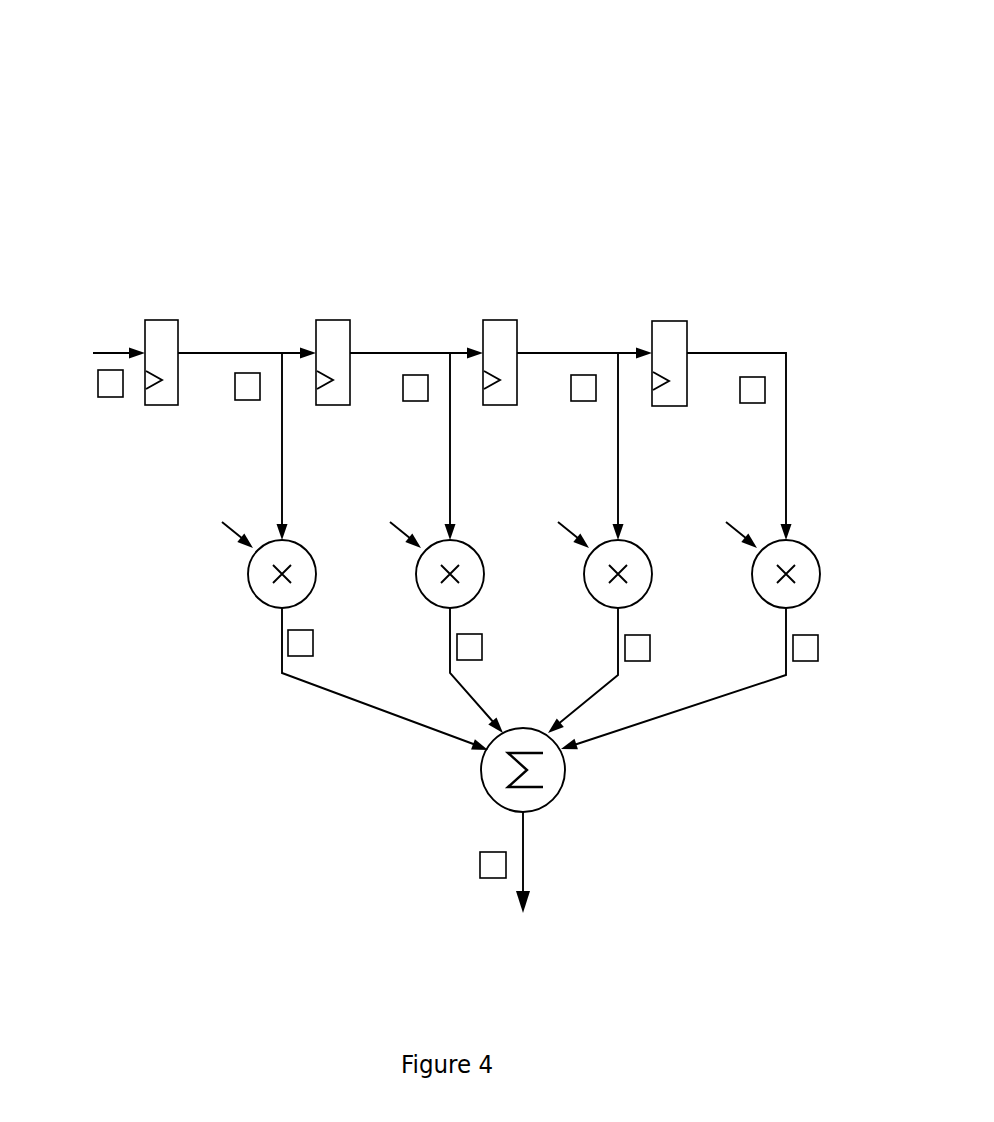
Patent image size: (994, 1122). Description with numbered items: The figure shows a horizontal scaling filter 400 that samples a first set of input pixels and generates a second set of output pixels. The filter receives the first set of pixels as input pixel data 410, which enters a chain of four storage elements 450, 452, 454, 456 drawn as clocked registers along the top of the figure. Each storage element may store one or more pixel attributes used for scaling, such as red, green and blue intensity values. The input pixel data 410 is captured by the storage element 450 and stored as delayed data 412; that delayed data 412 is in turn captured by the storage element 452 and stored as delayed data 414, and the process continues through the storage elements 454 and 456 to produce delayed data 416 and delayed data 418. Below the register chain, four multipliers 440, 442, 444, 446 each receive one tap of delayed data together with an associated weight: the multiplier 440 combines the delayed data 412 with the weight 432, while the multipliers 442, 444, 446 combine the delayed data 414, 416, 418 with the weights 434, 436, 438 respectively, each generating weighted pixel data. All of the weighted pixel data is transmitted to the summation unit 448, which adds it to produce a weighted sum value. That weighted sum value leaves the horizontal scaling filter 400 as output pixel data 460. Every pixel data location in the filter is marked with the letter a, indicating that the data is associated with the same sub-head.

The horizontal scaling filter 400 is at (728, 92).
The input pixel data 410 is at (100, 353).
The delayed data 412 is at (245, 352).
The delayed data 414 is at (418, 352).
The delayed data 416 is at (590, 352).
The delayed data 418 is at (750, 354).
The weight 432 is at (225, 509).
The weight 434 is at (393, 509).
The weight 436 is at (561, 509).
The weight 438 is at (729, 509).
The multiplier 440 is at (258, 598).
The multiplier 442 is at (426, 598).
The multiplier 444 is at (594, 598).
The multiplier 446 is at (762, 598).
The summation unit 448 is at (484, 788).
The storage element 450 is at (154, 320).
The storage element 452 is at (330, 320).
The storage element 454 is at (490, 320).
The storage element 456 is at (661, 321).
The output pixel data 460 is at (524, 862).